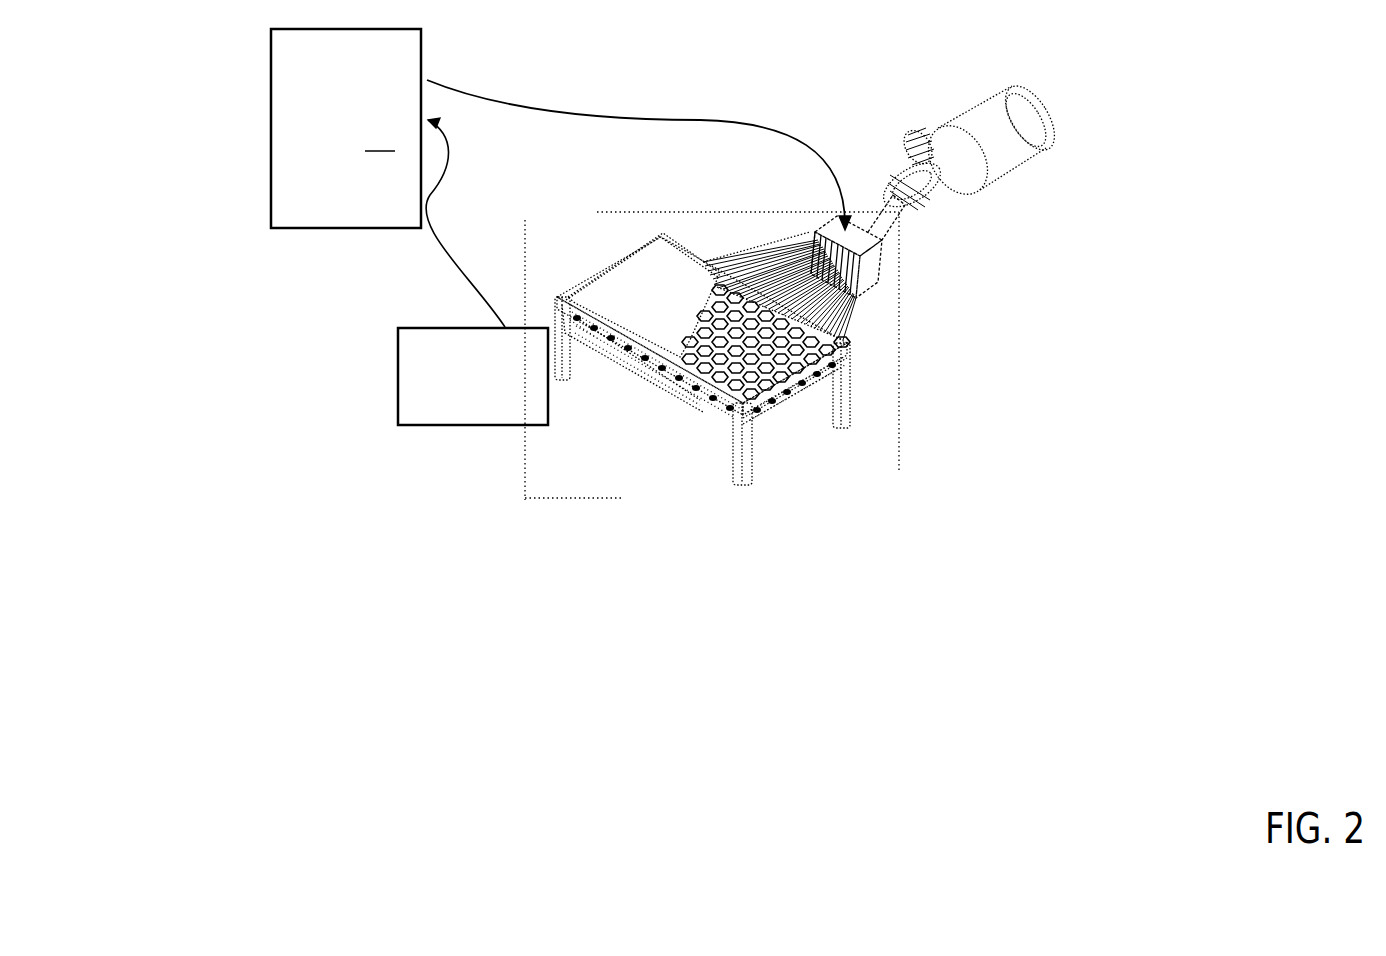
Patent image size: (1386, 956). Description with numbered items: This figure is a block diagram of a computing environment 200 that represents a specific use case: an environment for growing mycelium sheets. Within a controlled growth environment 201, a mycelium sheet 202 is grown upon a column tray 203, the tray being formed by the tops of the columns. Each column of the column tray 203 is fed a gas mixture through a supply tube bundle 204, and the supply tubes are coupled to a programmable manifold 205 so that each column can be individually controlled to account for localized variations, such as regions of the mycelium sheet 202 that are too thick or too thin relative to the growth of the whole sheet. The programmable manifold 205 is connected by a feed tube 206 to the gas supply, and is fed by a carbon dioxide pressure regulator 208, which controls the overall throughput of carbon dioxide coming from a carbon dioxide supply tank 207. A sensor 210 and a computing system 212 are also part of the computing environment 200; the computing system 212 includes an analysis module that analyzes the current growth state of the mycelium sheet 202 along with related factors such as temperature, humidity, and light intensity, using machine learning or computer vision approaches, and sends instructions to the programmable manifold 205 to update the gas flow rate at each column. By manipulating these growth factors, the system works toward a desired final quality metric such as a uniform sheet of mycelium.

The computing environment 200 is at (205, 90).
The controlled growth environment 201 is at (523, 450).
The mycelium sheet 202 is at (650, 292).
The column tray 203 is at (775, 420).
The supply tube bundle 204 is at (770, 247).
The programmable manifold 205 is at (873, 292).
The feed tube 206 is at (898, 243).
The carbon dioxide supply tank 207 is at (988, 82).
The carbon dioxide pressure regulator 208 is at (904, 158).
The sensor 210 is at (473, 271).
The computing system 212 is at (346, 128).